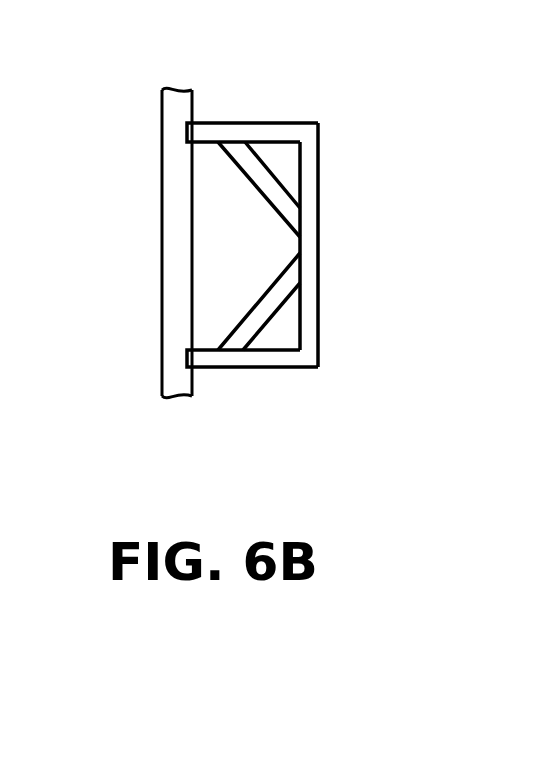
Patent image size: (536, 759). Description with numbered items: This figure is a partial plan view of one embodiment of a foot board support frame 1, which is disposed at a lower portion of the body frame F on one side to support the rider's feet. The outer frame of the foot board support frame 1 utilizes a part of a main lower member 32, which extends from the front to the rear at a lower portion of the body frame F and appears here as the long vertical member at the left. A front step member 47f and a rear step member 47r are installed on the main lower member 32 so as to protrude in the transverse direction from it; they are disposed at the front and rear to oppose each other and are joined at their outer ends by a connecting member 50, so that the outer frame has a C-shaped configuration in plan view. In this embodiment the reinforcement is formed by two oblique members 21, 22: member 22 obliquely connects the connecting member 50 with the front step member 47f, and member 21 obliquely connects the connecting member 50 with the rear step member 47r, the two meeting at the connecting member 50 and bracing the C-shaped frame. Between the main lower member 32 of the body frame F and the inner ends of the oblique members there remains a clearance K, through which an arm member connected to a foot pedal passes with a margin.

The foot board support frame 1 is at (315, 240).
The body frame F is at (117, 243).
The main lower member 32 is at (170, 260).
The front step member 47f is at (212, 133).
The rear step member 47r is at (282, 358).
The connecting member 50 is at (312, 188).
The oblique reinforcement member 22 is at (268, 180).
The oblique reinforcement member 21 is at (267, 311).
The clearance K is at (208, 323).